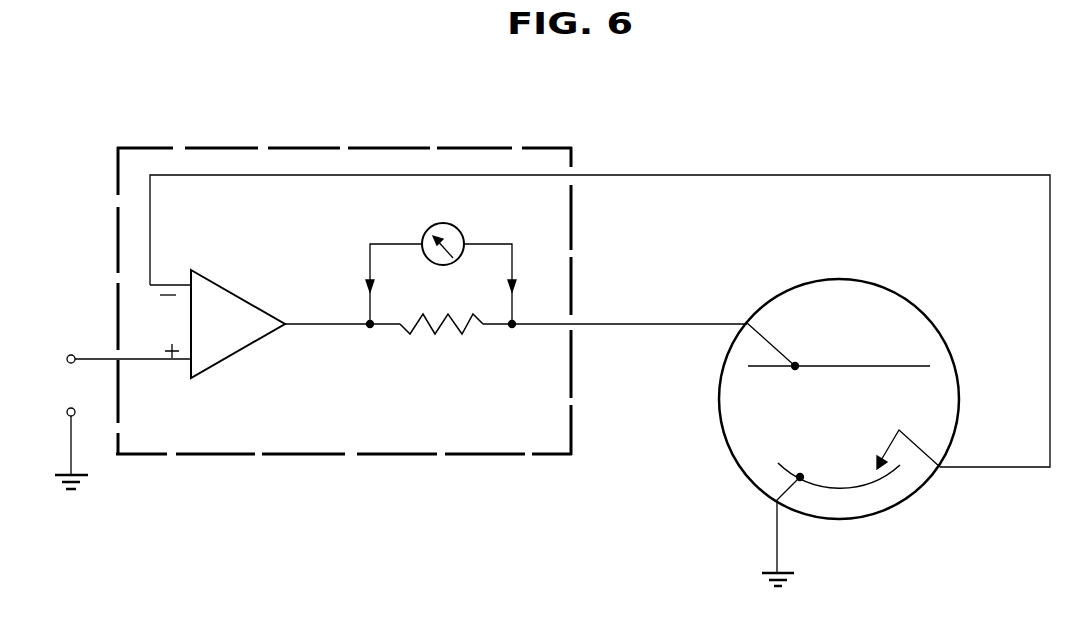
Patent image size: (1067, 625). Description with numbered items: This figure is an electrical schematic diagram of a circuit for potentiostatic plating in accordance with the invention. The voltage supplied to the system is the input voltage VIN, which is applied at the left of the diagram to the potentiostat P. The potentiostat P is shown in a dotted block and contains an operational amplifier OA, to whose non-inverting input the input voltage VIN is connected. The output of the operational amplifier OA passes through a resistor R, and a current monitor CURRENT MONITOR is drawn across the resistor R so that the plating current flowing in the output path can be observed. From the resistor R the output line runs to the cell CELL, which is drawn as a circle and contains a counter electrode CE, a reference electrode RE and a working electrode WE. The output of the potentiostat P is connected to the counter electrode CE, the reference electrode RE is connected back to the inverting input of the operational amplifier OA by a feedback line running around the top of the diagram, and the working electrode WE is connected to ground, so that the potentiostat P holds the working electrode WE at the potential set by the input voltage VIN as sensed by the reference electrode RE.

The potentiostat P is at (202, 147).
The operational amplifier OA is at (222, 324).
The input voltage VIN is at (123, 422).
The resistor R is at (441, 338).
The current monitor meter CURRENT MONITOR is at (428, 229).
The cell CELL is at (897, 292).
The counter electrode CE is at (824, 336).
The reference electrode RE is at (871, 462).
The working electrode WE is at (774, 531).